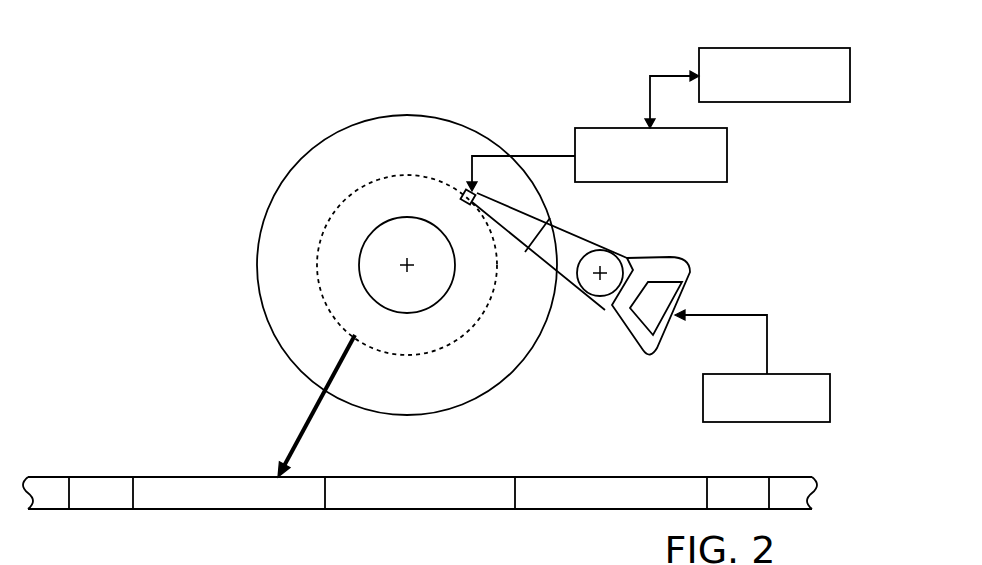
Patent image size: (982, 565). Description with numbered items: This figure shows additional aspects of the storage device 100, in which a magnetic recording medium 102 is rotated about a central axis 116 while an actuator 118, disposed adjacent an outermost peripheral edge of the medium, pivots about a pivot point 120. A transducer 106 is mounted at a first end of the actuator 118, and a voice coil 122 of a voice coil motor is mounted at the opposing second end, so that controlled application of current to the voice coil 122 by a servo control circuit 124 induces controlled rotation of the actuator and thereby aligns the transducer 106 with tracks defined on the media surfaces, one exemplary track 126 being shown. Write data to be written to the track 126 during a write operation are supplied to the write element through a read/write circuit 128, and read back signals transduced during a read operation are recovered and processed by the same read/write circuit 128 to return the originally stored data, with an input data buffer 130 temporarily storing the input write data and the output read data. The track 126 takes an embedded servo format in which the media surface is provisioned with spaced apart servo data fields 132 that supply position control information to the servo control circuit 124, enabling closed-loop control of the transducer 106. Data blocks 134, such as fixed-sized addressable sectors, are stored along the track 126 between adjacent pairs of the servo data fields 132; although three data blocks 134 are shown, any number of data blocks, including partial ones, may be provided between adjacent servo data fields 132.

The storage device 100 is at (150, 134).
The magnetic recording medium 102 is at (270, 268).
The transducer 106 is at (450, 170).
The central axis 116 is at (416, 262).
The actuator 118 is at (583, 230).
The pivot point 120 is at (600, 280).
The voice coil 122 is at (690, 282).
The servo control circuit 124 is at (810, 374).
The track 126 is at (320, 237).
The read/write circuit 128 is at (728, 155).
The input data buffer 130 is at (775, 47).
The servo data field 132 is at (102, 475).
The data block 134 is at (195, 475).